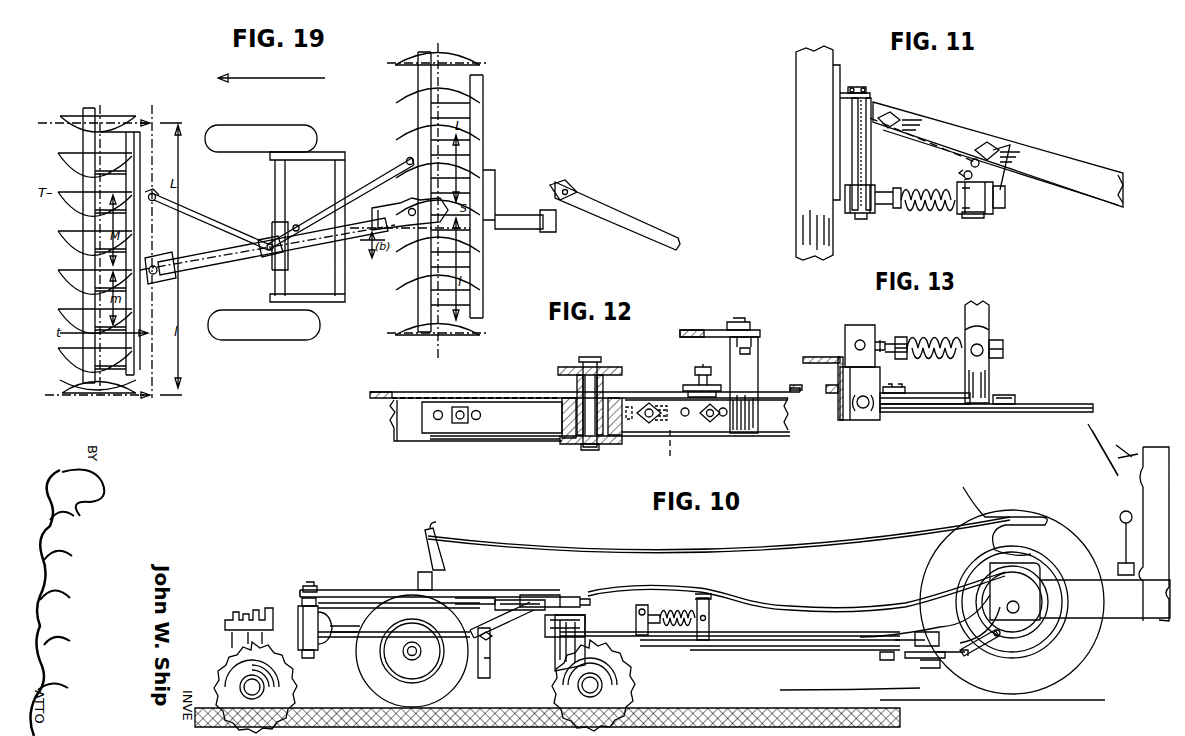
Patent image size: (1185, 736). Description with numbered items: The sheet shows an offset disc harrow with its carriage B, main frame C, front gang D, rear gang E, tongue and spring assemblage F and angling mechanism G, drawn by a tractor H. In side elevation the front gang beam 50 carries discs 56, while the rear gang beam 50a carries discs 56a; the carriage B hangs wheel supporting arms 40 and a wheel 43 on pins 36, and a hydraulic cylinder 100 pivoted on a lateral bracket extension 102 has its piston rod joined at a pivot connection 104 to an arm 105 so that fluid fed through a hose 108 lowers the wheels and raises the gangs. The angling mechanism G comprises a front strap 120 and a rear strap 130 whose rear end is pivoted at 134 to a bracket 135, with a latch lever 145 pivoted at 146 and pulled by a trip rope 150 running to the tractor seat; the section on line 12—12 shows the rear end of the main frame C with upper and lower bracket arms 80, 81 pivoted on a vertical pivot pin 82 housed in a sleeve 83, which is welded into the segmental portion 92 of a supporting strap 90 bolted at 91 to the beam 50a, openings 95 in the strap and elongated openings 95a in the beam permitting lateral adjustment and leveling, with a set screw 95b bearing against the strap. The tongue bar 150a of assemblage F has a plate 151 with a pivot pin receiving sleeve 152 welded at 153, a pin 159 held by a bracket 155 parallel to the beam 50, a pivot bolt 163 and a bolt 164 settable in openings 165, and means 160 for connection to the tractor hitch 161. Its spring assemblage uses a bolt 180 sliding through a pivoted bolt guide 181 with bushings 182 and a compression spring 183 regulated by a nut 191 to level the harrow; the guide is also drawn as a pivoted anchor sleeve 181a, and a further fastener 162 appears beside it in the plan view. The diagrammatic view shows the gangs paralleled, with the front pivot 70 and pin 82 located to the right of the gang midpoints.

In FIG. 10, the section line 12— 12 is at (307, 572).
In FIG. 10, the supporting bolts or pins 36 is at (490, 640).
In FIG. 10, the wheel supporting arms 40 is at (466, 652).
In FIG. 10, the wheel 43 is at (445, 680).
In FIG. 19, the main beam of front gang 50 is at (480, 292).
In FIG. 11, the main beam of front gang 50 is at (806, 161).
In FIG. 19, the beam of rear gang structure 50a is at (152, 387).
In FIG. 12, the beam of rear gang structure 50a is at (396, 408).
In FIG. 10, the beam of rear gang structure 50a is at (290, 621).
In FIG. 10, the discs 56 is at (548, 682).
In FIG. 10, the discs of rear gang 56a is at (220, 662).
In FIG. 19, the front pivot 70 is at (410, 220).
In FIG. 12, the upper bracket arm 80 is at (557, 371).
In FIG. 12, the lower bracket arm 81 is at (568, 440).
In FIG. 19, the vertical pivot pin 82 is at (160, 255).
In FIG. 12, the vertical pivot pin 82 is at (597, 358).
In FIG. 10, the vertical pivot pin 82 is at (318, 660).
In FIG. 12, the sleeve 83 is at (616, 390).
In FIG. 12, the laterally adjustable supporting strap 90 is at (496, 428).
In FIG. 12, the bolts 91 is at (455, 424).
In FIG. 12, the segmental portion 92 is at (565, 408).
In FIG. 12, the openings in strap 95 is at (410, 426).
In FIG. 12, the openings in beam 95a is at (683, 434).
In FIG. 12, the set screw 95b is at (700, 364).
In FIG. 10, the hydraulic cylinder 100 is at (556, 596).
In FIG. 10, the lateral bracket extension 102 is at (580, 612).
In FIG. 10, the pivot connection 104 is at (515, 600).
In FIG. 10, the arm 105 is at (455, 630).
In FIG. 10, the hose 108 is at (636, 598).
In FIG. 10, the front strap 120 is at (470, 596).
In FIG. 12, the rear strap 130 is at (725, 332).
In FIG. 10, the rear strap 130 is at (368, 590).
In FIG. 12, the pivot connection 134 is at (748, 328).
In FIG. 10, the pivot connection 134 is at (312, 584).
In FIG. 12, the bracket 135 is at (748, 360).
In FIG. 10, the latch lever 145 is at (440, 562).
In FIG. 10, the pivot of latch lever 146 is at (438, 564).
In FIG. 13, the trip rope 150 is at (1048, 408).
In FIG. 10, the trip rope 150 is at (709, 556).
In FIG. 11, the tongue bar 150a is at (1128, 180).
In FIG. 10, the tongue bar 150a is at (828, 652).
In FIG. 11, the plate 151 is at (935, 137).
In FIG. 13, the plate 151 is at (947, 402).
In FIG. 11, the pivot pin receiving sleeve 152 is at (853, 134).
In FIG. 11, the weld 153 is at (870, 155).
In FIG. 13, the bracket 155 is at (872, 378).
In FIG. 11, the pin 159 is at (858, 87).
In FIG. 13, the pin 159 is at (865, 408).
In FIG. 10, the means for pivotal connection 160 is at (910, 660).
In FIG. 10, the tractor hitch 161 is at (976, 644).
In FIG. 11, the bolt 162 is at (995, 186).
In FIG. 11, the pivot bolt 163 is at (898, 115).
In FIG. 13, the pivot bolt 163 is at (916, 404).
In FIG. 11, the bolt 164 is at (992, 150).
In FIG. 11, the openings 165 is at (975, 165).
In FIG. 11, the bolt 180 is at (880, 212).
In FIG. 13, the bolt 180 is at (885, 347).
In FIG. 10, the bolt 180 is at (680, 610).
In FIG. 11, the pivoted bolt guide 181 is at (985, 212).
In FIG. 13, the bracket 181a is at (985, 378).
In FIG. 11, the bushings 182 is at (962, 212).
In FIG. 13, the bushings 182 is at (995, 340).
In FIG. 11, the compression spring 183 is at (922, 210).
In FIG. 13, the compression spring 183 is at (935, 340).
In FIG. 10, the compression spring 183 is at (690, 643).
In FIG. 11, the nut 191 is at (893, 210).
In FIG. 13, the nut 191 is at (905, 354).
In FIG. 10, the nut 191 is at (668, 630).
In FIG. 19, the carriage B is at (248, 140).
In FIG. 10, the carriage B is at (372, 672).
In FIG. 19, the main frame C is at (203, 268).
In FIG. 10, the main frame C is at (355, 646).
In FIG. 19, the front gang D is at (478, 92).
In FIG. 10, the front gang D is at (625, 680).
In FIG. 19, the rear gang E is at (132, 114).
In FIG. 10, the rear gang E is at (210, 662).
In FIG. 19, the tongue and spring assemblage F is at (590, 190).
In FIG. 11, the tongue and spring assemblage F is at (1072, 165).
In FIG. 10, the tongue and spring assemblage F is at (772, 644).
In FIG. 10, the gang adjusting or angling mechanism G is at (386, 592).
In FIG. 10, the tractor H is at (1131, 610).